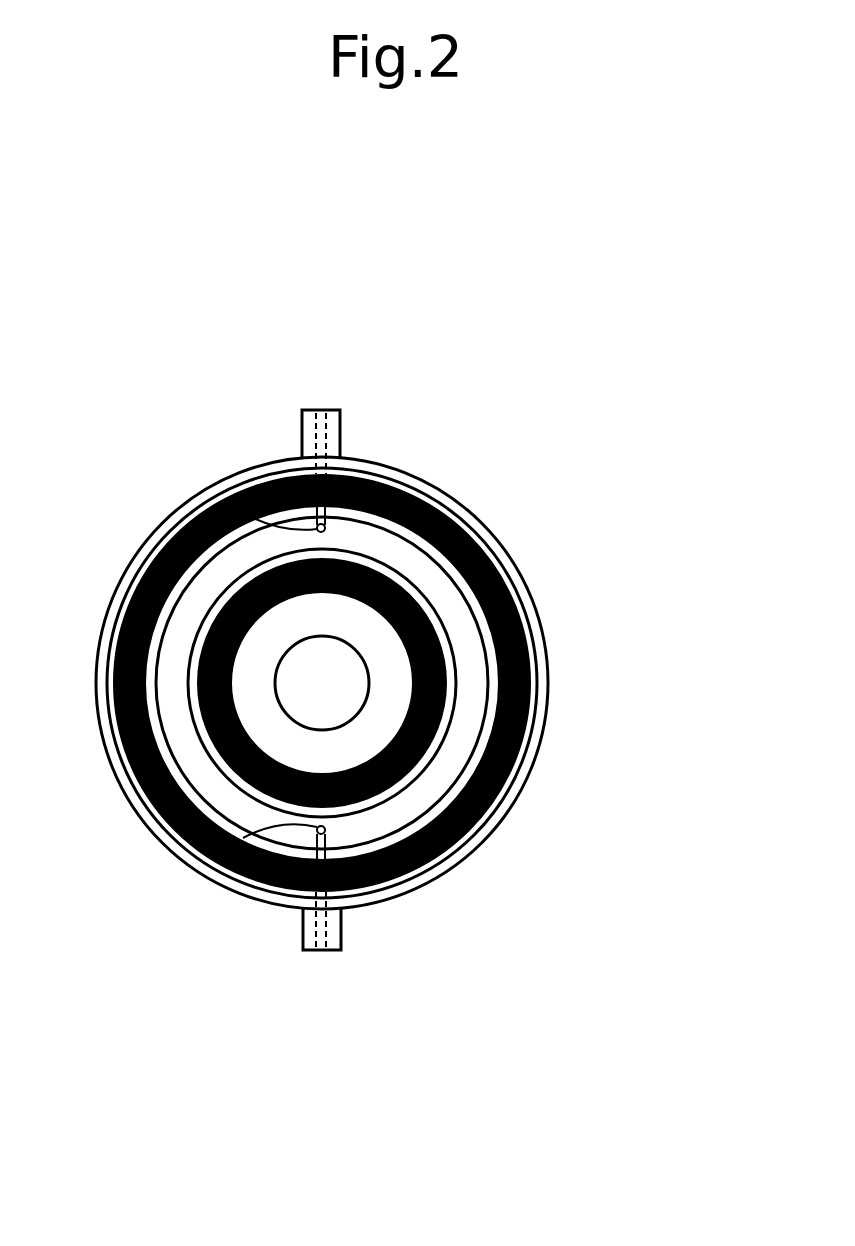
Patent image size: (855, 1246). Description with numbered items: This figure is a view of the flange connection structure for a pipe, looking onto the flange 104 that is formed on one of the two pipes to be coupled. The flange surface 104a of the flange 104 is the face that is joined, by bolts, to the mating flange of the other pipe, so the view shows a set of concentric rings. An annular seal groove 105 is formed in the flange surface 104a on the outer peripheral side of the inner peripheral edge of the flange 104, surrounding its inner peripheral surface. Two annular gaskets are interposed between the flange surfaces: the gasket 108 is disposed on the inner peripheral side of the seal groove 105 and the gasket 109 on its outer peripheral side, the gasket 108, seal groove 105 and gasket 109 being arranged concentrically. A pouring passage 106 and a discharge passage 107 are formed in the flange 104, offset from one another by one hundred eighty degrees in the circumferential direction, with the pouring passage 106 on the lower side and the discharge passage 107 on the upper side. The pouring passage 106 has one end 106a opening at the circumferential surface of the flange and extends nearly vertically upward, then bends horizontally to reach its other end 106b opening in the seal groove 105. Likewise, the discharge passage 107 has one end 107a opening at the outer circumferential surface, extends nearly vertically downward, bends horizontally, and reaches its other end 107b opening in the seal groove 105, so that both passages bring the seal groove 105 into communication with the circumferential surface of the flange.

The flange 104 is at (490, 533).
The flange surface 104a is at (522, 602).
The seal groove 105 is at (377, 537).
The pouring passage 106 is at (283, 902).
The one end of pouring passage 106a is at (323, 950).
The other end of pouring passage 106b is at (212, 863).
The discharge passage 107 is at (305, 462).
The one end of discharge passage 107a is at (323, 410).
The other end of discharge passage 107b is at (230, 488).
The gasket 108 is at (432, 705).
The gasket 109 is at (532, 670).